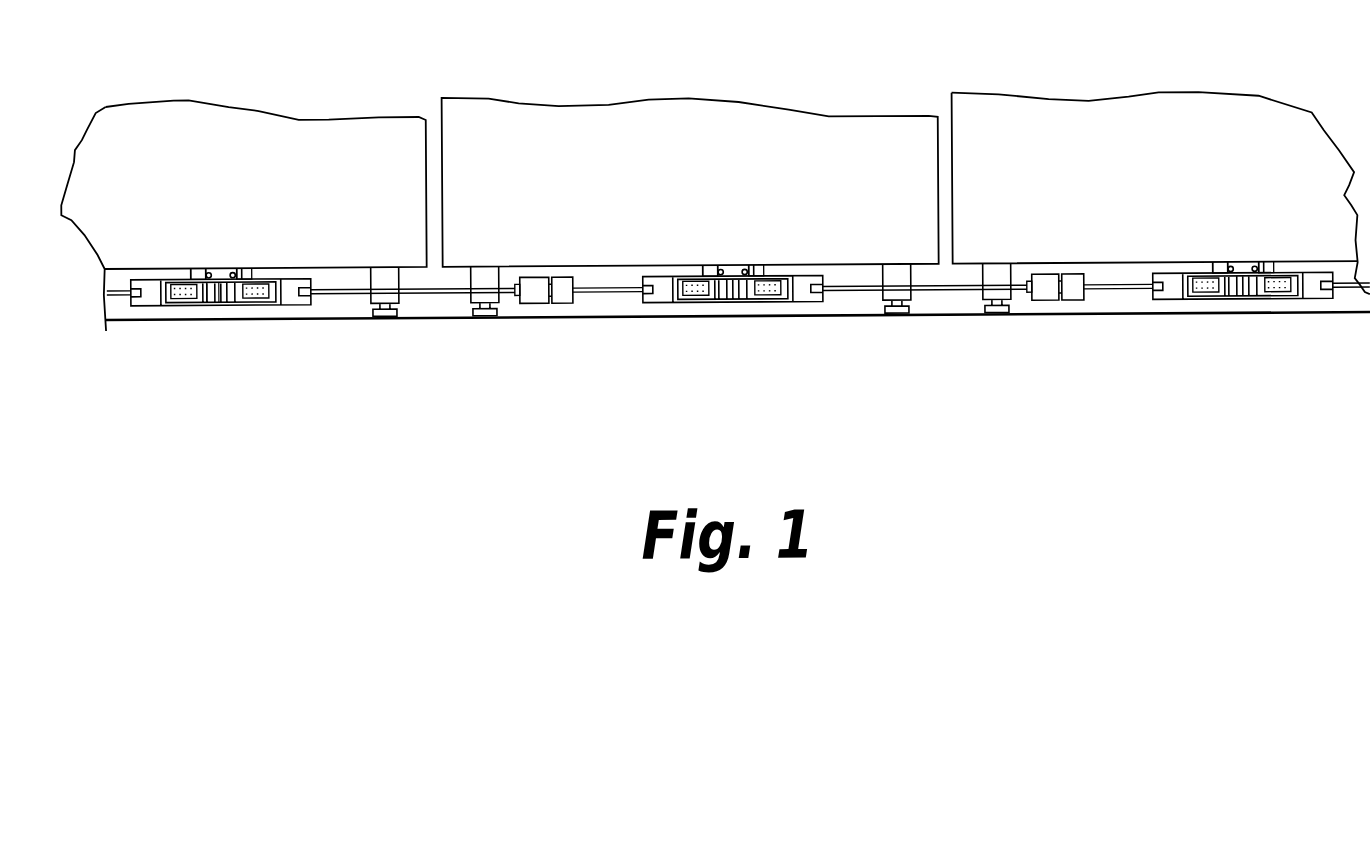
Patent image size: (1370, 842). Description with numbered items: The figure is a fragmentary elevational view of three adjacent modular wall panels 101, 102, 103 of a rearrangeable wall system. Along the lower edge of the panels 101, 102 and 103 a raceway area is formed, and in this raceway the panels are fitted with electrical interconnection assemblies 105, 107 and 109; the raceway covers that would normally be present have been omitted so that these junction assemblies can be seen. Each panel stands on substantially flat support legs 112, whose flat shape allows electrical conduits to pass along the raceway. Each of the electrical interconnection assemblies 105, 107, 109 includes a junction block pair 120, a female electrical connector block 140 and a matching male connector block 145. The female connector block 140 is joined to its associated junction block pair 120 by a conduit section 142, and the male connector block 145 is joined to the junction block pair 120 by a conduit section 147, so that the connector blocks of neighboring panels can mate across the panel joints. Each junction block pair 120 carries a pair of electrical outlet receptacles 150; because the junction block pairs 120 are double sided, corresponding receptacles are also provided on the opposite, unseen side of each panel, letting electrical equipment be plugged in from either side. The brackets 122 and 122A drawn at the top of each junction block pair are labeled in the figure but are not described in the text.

The modular wall panel 101 is at (250, 119).
The modular wall panel 102 is at (693, 104).
The modular wall panel 103 is at (1137, 105).
The electrical interconnection assembly 105 is at (147, 307).
The electrical interconnection assembly 107 is at (658, 304).
The electrical interconnection assembly 109 is at (1165, 304).
The support leg 112 is at (382, 302).
The junction block pair 120 is at (213, 274).
The bracket 122 is at (178, 278).
The bracket 122A is at (277, 274).
The female electrical connector block 140 is at (562, 303).
The conduit section 142 is at (607, 290).
The male connector block 145 is at (533, 303).
The conduit section 147 is at (330, 294).
The electrical outlet receptacle 150 is at (257, 295).